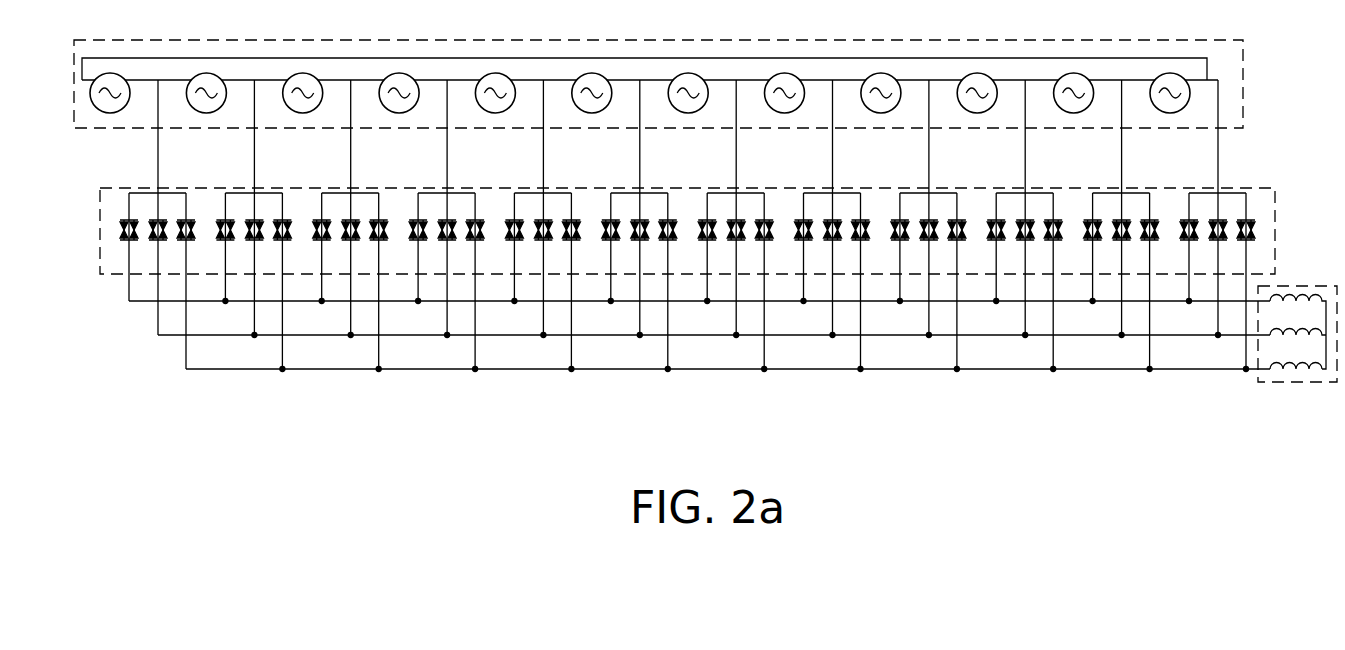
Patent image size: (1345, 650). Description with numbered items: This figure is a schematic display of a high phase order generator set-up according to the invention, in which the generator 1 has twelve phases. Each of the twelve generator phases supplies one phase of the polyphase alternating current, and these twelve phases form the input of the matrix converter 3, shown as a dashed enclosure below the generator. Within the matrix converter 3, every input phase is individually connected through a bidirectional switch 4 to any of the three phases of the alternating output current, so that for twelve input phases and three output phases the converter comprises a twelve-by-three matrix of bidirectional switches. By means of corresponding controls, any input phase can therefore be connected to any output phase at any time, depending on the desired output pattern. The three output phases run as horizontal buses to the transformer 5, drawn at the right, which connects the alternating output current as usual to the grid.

The generator 1 is at (1243, 87).
The matrix converter 3 is at (690, 279).
The bidirectional switch 4 is at (129, 218).
The transformer 5 is at (1290, 382).